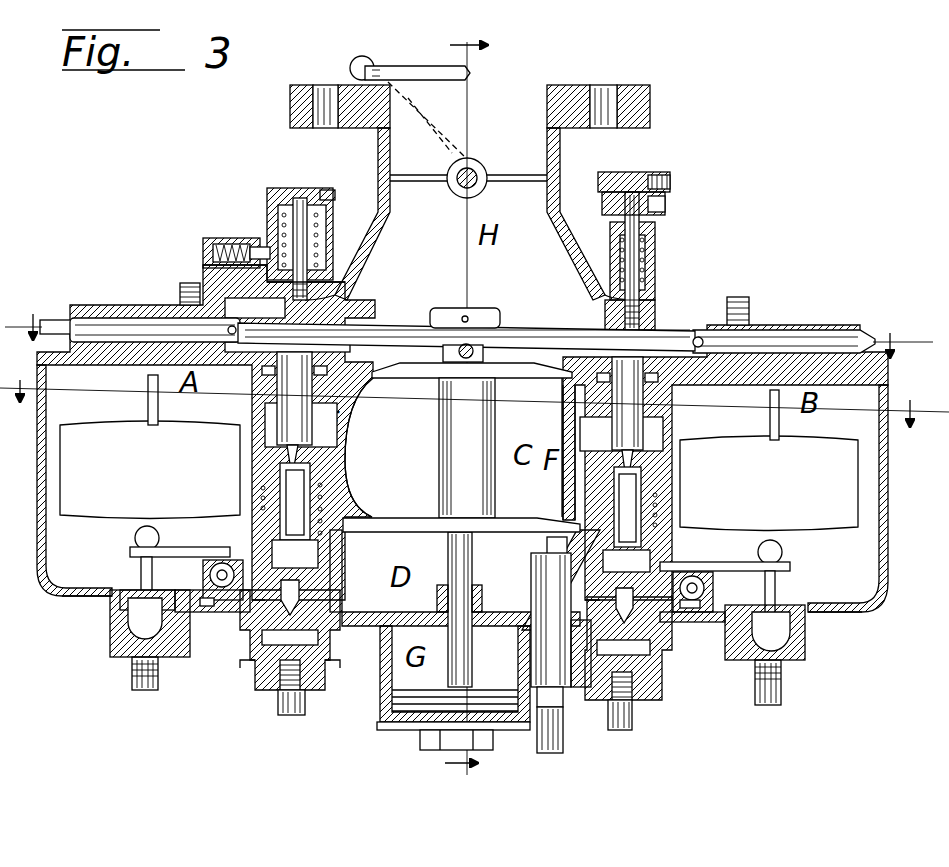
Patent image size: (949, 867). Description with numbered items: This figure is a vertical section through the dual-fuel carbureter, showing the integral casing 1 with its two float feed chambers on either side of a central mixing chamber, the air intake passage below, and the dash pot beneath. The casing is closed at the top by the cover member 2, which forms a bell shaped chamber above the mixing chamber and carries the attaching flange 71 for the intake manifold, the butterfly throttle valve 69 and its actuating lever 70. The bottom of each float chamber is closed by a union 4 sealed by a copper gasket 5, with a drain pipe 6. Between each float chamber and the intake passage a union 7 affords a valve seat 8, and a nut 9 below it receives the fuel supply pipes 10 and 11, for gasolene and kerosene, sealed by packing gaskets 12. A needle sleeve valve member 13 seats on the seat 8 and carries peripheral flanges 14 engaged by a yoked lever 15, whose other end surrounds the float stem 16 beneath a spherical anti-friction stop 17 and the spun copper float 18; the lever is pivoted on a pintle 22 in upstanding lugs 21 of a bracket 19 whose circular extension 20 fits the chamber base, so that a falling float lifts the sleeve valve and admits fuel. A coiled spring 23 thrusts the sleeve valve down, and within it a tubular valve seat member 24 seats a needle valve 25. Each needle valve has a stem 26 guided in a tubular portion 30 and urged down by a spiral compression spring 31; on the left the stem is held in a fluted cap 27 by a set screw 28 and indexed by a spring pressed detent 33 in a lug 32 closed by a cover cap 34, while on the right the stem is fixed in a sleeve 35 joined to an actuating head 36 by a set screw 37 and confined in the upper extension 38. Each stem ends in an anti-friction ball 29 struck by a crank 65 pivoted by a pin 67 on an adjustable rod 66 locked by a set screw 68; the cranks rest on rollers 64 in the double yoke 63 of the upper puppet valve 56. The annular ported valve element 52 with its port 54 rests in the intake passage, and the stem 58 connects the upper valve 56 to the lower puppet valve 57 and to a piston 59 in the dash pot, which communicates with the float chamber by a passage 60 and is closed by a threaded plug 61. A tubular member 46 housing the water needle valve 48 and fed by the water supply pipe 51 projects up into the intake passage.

The integral casing 1 is at (390, 628).
The cover member 2 is at (552, 160).
The union 4 is at (807, 685).
The copper gasket 5 is at (826, 640).
The pipe 6 is at (157, 685).
The union 7 is at (240, 633).
The valve seat 8 is at (292, 600).
The nut 9 is at (268, 678).
The fuel supply pipe 10 is at (290, 700).
The fuel supply pipe 11 is at (625, 730).
The packing gasket 12 is at (345, 617).
The needle sleeve valve member 13 is at (330, 563).
The peripheral flange 14 is at (258, 542).
The yoked lever 15 is at (187, 542).
The float stem 16 is at (141, 567).
The spherical anti-friction stop 17 is at (135, 537).
The spun copper float 18 is at (73, 472).
The bracket 19 is at (210, 577).
The circular extension 20 is at (107, 605).
The upstanding lug 21 is at (277, 576).
The pintle 22 is at (222, 548).
The coiled spring 23 is at (263, 500).
The tubular valve seat member 24 is at (290, 483).
The needle valve 25 is at (277, 443).
The stem 26 is at (298, 235).
The fluted cap 27 is at (297, 233).
The set screw 28 is at (343, 179).
The anti-friction ball 29 is at (340, 312).
The tubular portion 30 is at (315, 237).
The spiral compression spring 31 is at (330, 248).
The upstanding lug 32 is at (222, 240).
The spring pressed detent 33 is at (257, 247).
The cover cap 34 is at (205, 248).
The sleeve 35 is at (666, 205).
The actuating head 36 is at (660, 172).
The set screw 37 is at (672, 183).
The upper extension 38 is at (602, 196).
The tubular member 46 is at (543, 578).
The needle valve 48 is at (561, 452).
The water supply pipe 51 is at (555, 752).
The annular ported valve element 52 is at (372, 389).
The water and kerosene intake port 54 is at (556, 452).
The upper puppet valve 56 is at (402, 366).
The lower puppet valve 57 is at (502, 525).
The stem 58 is at (496, 433).
The piston 59 is at (493, 695).
The passage 60 is at (531, 608).
The threaded plug 61 is at (408, 730).
The double yoke 63 is at (470, 308).
The roller 64 is at (473, 345).
The crank 65 is at (388, 322).
The rod 66 is at (113, 320).
The pin 67 is at (700, 333).
The set screw 68 is at (185, 307).
The butterfly throttle valve 69 is at (507, 177).
The actuating lever 70 is at (372, 50).
The attaching flange 71 is at (633, 110).